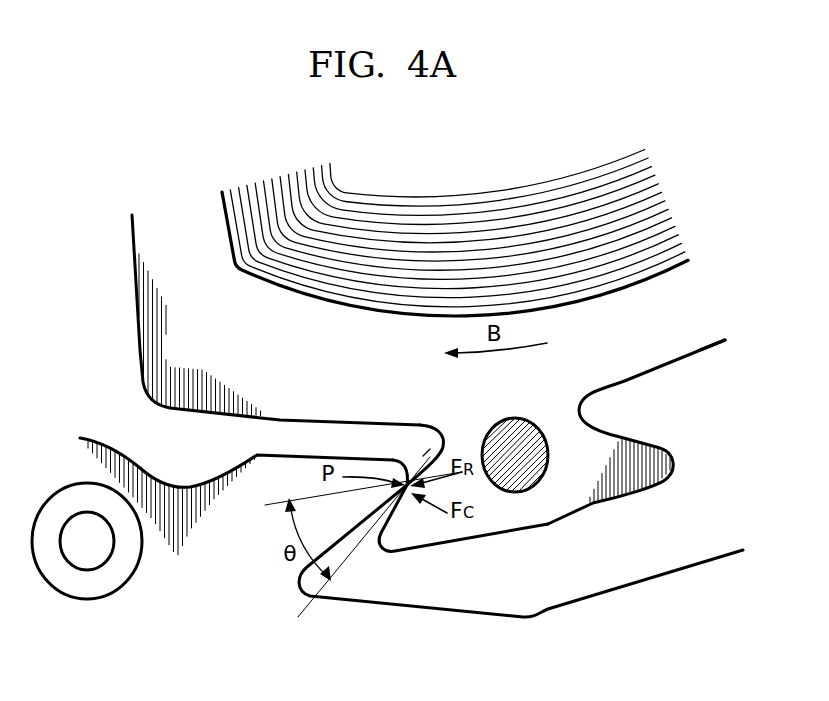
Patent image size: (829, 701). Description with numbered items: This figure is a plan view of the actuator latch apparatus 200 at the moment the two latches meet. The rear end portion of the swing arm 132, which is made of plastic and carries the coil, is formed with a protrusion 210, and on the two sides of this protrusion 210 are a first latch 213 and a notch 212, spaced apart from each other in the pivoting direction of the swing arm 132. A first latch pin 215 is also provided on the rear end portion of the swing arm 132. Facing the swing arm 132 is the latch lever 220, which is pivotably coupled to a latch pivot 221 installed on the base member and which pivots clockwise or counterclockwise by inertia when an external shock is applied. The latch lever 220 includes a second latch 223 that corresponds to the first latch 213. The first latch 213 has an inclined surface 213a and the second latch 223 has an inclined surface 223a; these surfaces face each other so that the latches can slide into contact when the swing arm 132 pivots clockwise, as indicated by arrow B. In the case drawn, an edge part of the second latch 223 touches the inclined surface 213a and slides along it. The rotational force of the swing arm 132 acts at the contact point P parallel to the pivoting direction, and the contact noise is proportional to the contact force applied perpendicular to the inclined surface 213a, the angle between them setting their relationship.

The swing arm 132 is at (683, 342).
The actuator latch apparatus 200 is at (189, 438).
The protrusion 210 is at (552, 512).
The notch 212 is at (672, 465).
The first latch 213 is at (403, 540).
The inclined surface 213a is at (425, 460).
The first latch pin 215 is at (515, 420).
The latch lever 220 is at (472, 647).
The latch pivot 221 is at (100, 548).
The second latch 223 is at (290, 462).
The inclined surface 223a is at (337, 545).